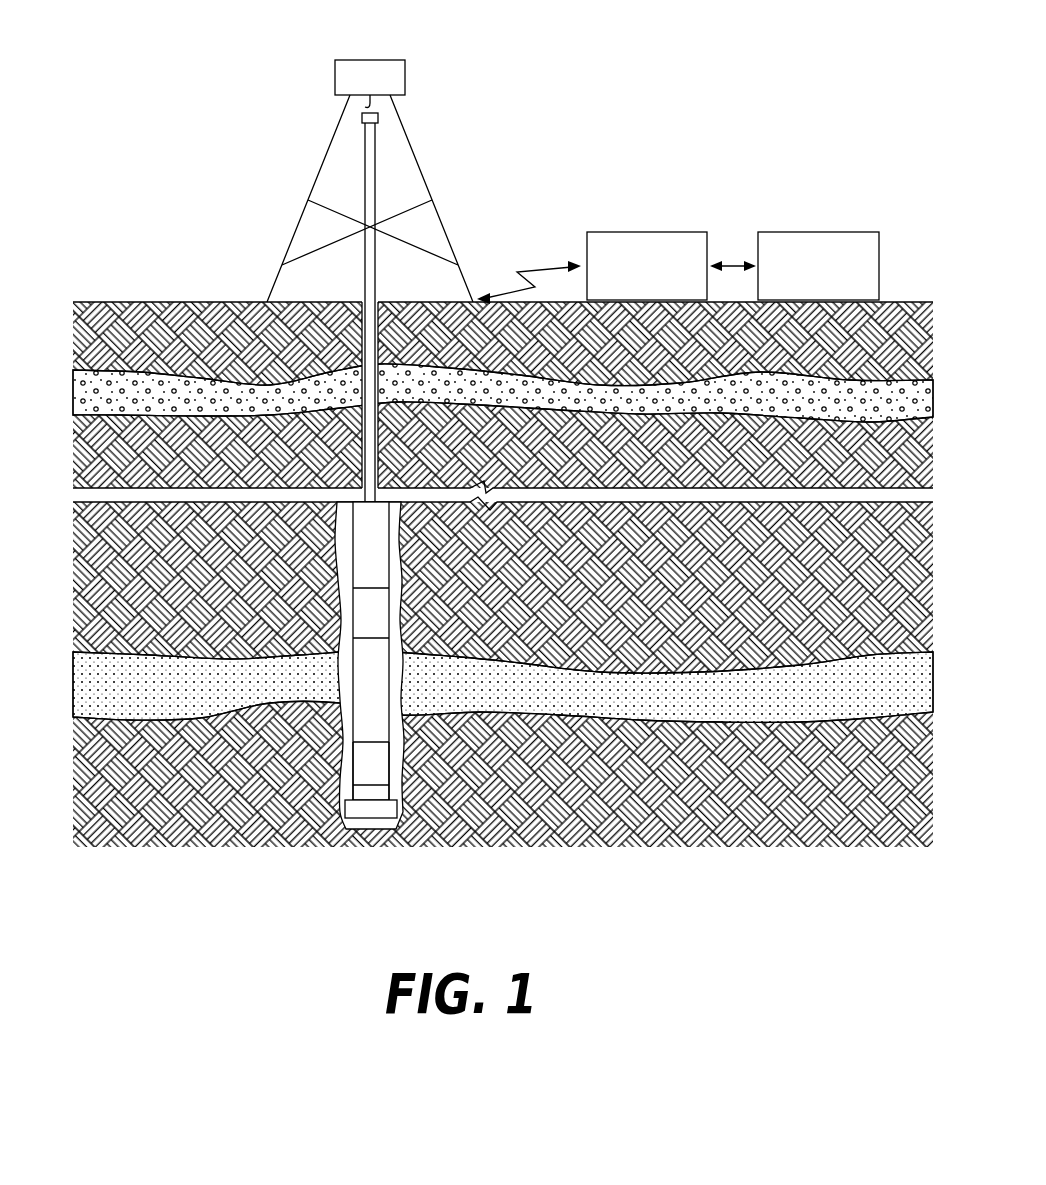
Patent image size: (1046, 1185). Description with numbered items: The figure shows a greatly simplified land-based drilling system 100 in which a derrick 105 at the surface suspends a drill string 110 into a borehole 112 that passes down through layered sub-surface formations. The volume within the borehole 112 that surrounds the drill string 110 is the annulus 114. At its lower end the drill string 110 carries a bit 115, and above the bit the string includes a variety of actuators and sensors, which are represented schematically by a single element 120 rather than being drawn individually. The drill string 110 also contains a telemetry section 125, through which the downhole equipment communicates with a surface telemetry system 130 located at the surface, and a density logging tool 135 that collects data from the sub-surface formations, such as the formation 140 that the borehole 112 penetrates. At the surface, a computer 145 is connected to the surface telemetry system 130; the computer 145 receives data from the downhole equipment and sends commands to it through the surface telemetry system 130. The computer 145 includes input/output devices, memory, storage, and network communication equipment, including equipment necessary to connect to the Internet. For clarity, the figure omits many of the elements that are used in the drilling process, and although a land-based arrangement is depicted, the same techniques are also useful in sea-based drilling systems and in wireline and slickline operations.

The drilling system 100 is at (664, 62).
The derrick 105 is at (393, 58).
The drill string 110 is at (378, 180).
The borehole 112 is at (378, 302).
The annulus 114 is at (397, 618).
The bit 115 is at (368, 810).
The actuators and sensors 120 is at (352, 766).
The telemetry section 125 is at (353, 615).
The surface telemetry system 130 is at (640, 232).
The density logging tool 135 is at (390, 725).
The formation 140 is at (641, 706).
The computer 145 is at (811, 232).